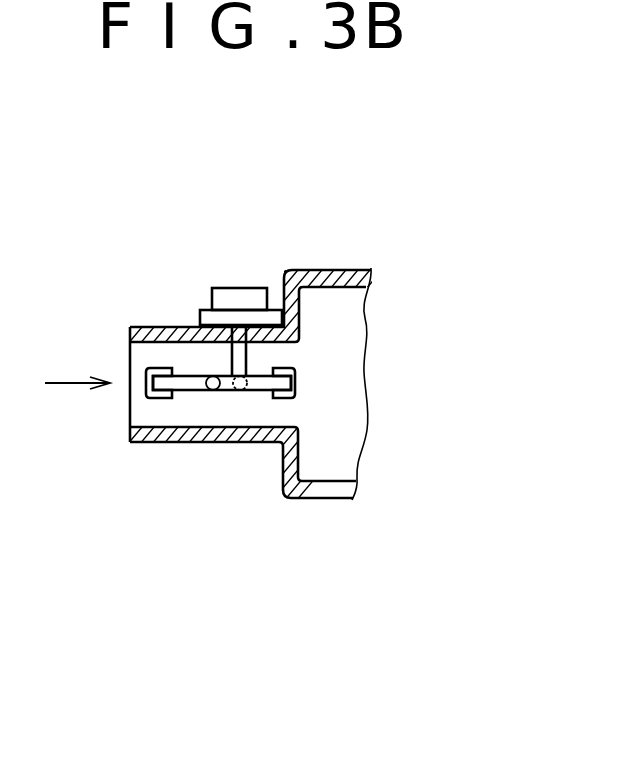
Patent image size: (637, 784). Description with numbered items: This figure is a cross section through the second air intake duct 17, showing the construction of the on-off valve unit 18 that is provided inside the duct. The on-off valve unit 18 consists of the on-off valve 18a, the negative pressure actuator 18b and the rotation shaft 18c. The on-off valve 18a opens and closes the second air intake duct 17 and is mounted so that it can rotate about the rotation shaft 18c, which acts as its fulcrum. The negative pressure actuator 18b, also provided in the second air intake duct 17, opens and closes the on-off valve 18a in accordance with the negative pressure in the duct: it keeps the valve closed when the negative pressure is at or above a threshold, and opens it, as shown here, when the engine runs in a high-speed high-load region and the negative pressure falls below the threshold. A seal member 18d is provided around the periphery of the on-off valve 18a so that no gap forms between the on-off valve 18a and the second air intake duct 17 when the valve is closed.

The second air intake duct 17 is at (154, 323).
The on-off valve unit 18 is at (291, 361).
The on-off valve 18a is at (253, 392).
The negative pressure actuator 18b is at (243, 288).
The rotation shaft 18c is at (207, 377).
The seal member 18d is at (300, 370).